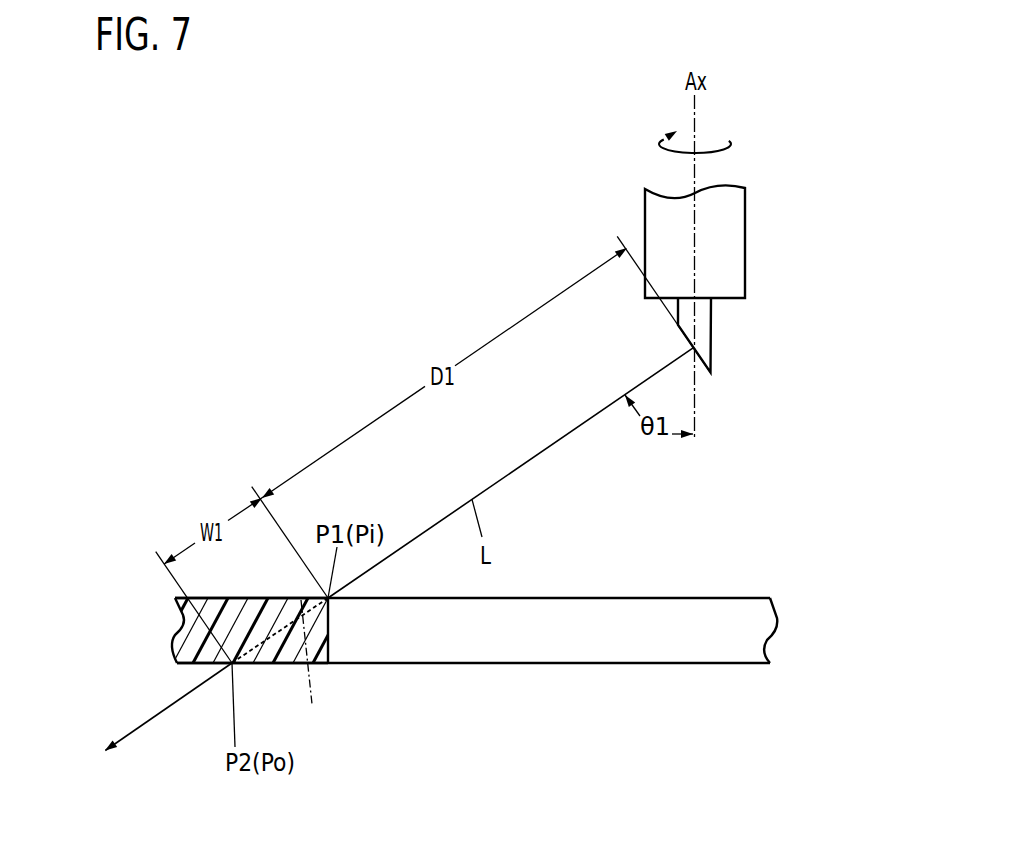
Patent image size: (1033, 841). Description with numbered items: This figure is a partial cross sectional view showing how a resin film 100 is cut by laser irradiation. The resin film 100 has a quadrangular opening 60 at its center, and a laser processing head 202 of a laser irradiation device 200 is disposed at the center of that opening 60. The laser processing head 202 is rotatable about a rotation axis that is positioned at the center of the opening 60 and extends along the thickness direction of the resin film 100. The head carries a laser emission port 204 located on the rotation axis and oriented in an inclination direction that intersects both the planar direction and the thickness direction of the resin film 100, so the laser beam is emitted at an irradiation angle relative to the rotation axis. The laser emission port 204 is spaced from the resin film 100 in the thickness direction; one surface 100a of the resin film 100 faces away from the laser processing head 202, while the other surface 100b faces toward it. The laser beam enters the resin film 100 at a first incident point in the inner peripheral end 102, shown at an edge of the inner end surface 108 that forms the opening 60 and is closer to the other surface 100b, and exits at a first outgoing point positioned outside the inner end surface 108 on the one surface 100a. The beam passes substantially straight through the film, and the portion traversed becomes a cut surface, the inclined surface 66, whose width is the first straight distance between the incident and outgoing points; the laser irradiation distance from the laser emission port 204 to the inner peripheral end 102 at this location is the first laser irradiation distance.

The opening 60 is at (567, 645).
The inclined surface 66 is at (311, 664).
The resin film 100 is at (229, 608).
The one surface 100a is at (178, 664).
The other surface 100b is at (280, 597).
The inner peripheral end 102 is at (153, 627).
The inner end surface 108 is at (330, 623).
The laser irradiation device 200 is at (728, 272).
The laser processing head 202 is at (722, 247).
The laser emission port 204 is at (696, 352).